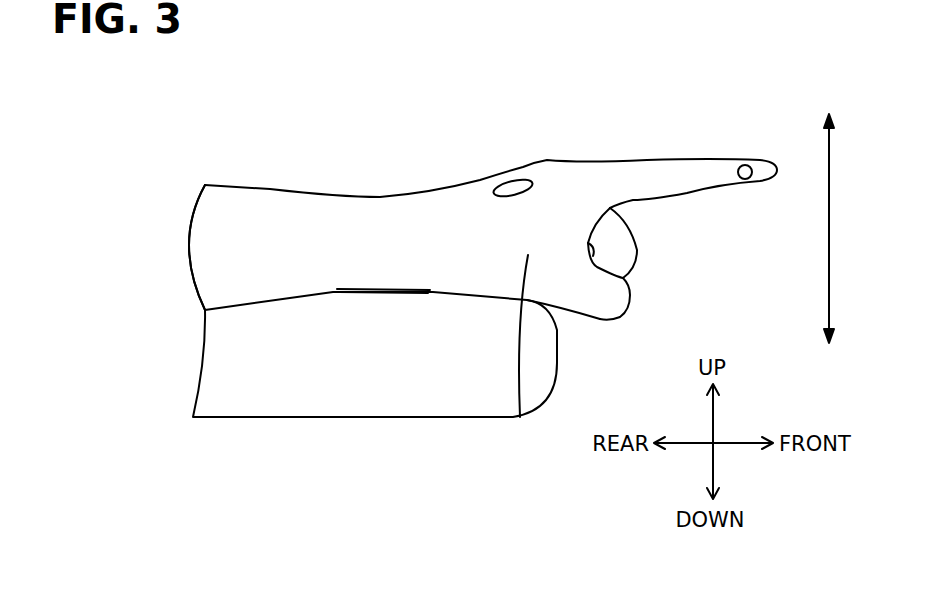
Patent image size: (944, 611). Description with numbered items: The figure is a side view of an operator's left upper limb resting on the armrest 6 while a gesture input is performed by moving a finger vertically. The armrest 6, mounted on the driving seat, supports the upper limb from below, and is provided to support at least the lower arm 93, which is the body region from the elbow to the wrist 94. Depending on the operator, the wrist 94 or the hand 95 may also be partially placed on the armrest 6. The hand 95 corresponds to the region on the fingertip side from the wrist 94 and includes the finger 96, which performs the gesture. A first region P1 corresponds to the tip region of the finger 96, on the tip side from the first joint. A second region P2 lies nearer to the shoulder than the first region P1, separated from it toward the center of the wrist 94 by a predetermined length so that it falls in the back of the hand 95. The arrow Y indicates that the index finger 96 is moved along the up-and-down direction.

The armrest 6 is at (370, 400).
The lower arm 93 is at (232, 202).
The wrist 94 is at (373, 230).
The hand 95 is at (518, 417).
The finger 96 is at (665, 170).
The first region P1 is at (747, 170).
The second region P2 is at (512, 190).
The arrow Y is at (828, 305).